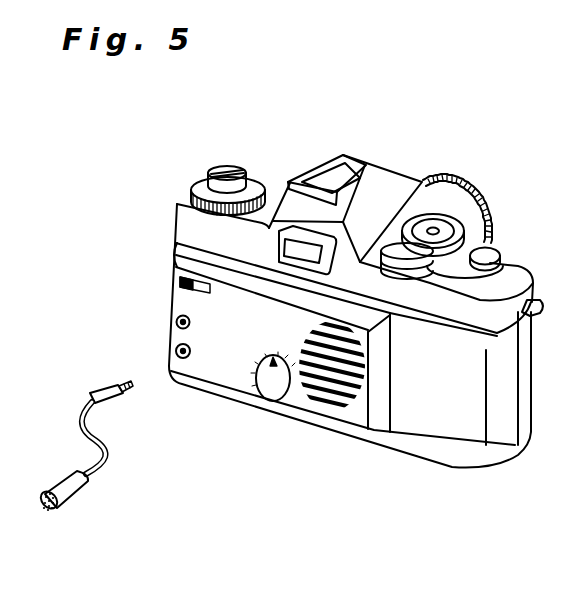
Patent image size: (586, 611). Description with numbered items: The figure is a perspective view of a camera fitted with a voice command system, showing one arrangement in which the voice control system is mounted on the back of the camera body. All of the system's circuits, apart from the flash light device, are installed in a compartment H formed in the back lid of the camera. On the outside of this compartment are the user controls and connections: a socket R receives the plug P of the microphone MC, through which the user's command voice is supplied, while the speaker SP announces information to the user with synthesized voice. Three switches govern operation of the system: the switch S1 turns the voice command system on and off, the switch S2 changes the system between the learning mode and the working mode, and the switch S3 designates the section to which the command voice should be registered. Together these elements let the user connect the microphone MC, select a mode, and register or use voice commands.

The compartment H is at (222, 388).
The switch S1 is at (178, 280).
The switch S2 is at (177, 322).
The socket R is at (176, 351).
The switch S3 is at (271, 401).
The speaker SP is at (350, 362).
The plug P is at (107, 390).
The microphone MC is at (63, 505).